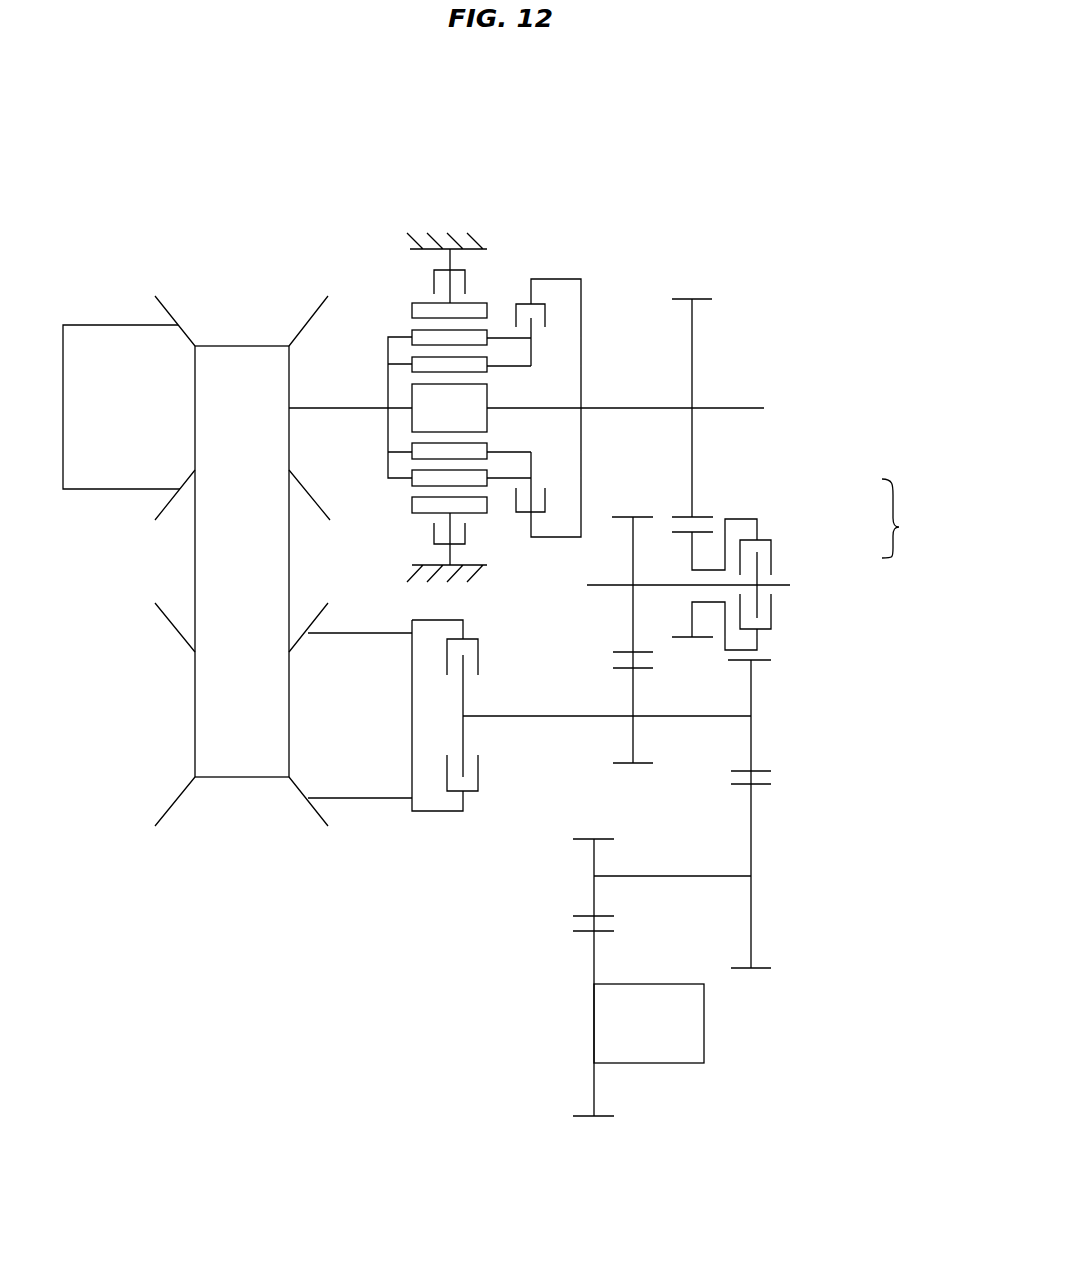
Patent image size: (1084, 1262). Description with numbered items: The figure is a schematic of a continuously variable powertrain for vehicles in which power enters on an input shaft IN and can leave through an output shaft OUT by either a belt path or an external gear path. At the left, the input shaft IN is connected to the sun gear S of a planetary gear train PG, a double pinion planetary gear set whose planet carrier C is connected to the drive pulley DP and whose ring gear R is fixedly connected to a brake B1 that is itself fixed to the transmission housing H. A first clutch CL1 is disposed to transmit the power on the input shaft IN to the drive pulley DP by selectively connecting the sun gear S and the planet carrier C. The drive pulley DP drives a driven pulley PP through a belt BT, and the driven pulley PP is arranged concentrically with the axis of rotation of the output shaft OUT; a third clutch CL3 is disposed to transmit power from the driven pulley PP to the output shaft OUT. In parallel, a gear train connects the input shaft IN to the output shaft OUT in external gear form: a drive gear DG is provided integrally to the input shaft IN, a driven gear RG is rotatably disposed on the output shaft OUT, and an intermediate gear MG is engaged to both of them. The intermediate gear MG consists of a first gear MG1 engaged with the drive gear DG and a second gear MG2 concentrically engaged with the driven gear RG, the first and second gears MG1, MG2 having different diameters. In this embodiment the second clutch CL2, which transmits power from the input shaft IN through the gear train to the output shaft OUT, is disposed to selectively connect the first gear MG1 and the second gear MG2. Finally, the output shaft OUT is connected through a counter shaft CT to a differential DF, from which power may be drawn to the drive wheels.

The drive pulley DP is at (168, 310).
The belt BT is at (205, 557).
The driven pulley PP is at (172, 807).
The planet carrier C is at (387, 353).
The planetary gear train PG is at (403, 323).
The sun gear S is at (413, 421).
The ring gear R is at (480, 303).
The brake B1 is at (430, 275).
The transmission housing H is at (443, 237).
The first clutch CL1 is at (544, 300).
The input shaft IN is at (730, 408).
The drive gear DG is at (704, 298).
The second gear MG2 is at (647, 517).
The first gear MG1 is at (703, 533).
The intermediate gear MG is at (913, 518).
The second clutch CL2 is at (777, 628).
The output shaft OUT is at (713, 716).
The driven gear RG is at (642, 768).
The counter shaft CT is at (752, 876).
The differential DF is at (704, 1027).
The third clutch CL3 is at (447, 790).